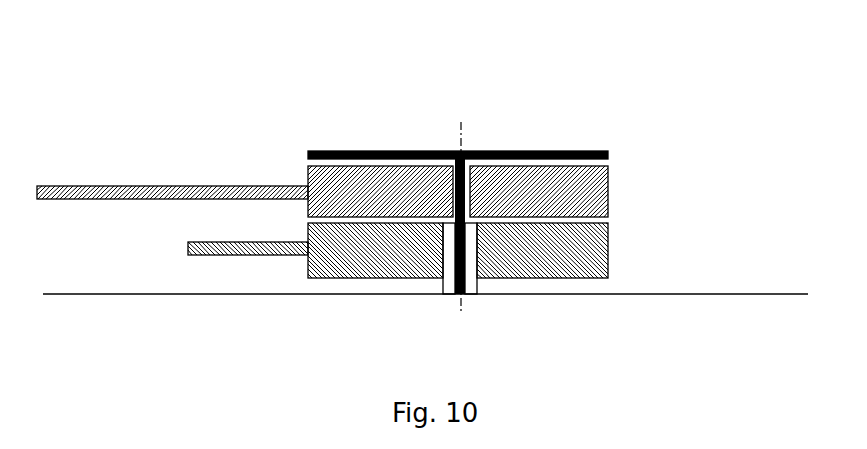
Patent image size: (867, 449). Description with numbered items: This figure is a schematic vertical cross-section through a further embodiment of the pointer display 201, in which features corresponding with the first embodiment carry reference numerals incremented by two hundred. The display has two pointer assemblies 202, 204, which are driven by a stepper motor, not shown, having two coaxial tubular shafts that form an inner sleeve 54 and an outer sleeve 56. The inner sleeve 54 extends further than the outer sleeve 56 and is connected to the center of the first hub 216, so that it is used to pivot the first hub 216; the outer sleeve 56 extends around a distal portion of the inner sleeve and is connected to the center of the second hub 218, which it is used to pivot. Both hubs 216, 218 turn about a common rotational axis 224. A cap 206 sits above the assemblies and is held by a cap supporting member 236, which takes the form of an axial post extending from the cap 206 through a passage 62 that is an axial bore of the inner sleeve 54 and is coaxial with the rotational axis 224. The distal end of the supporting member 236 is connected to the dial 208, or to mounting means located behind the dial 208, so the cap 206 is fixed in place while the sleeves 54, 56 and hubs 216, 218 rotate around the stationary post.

The pointer display 201 is at (260, 107).
The first pointer assembly 202 is at (613, 177).
The second pointer assembly 204 is at (615, 233).
The cap 206 is at (563, 151).
The dial 208 is at (142, 295).
The first hub 216 is at (605, 193).
The second hub 218 is at (600, 253).
The rotational axis 224 is at (463, 123).
The cap supporting member 236 is at (453, 197).
The inner sleeve 54 is at (488, 172).
The outer sleeve 56 is at (448, 282).
The passage 62 is at (467, 200).